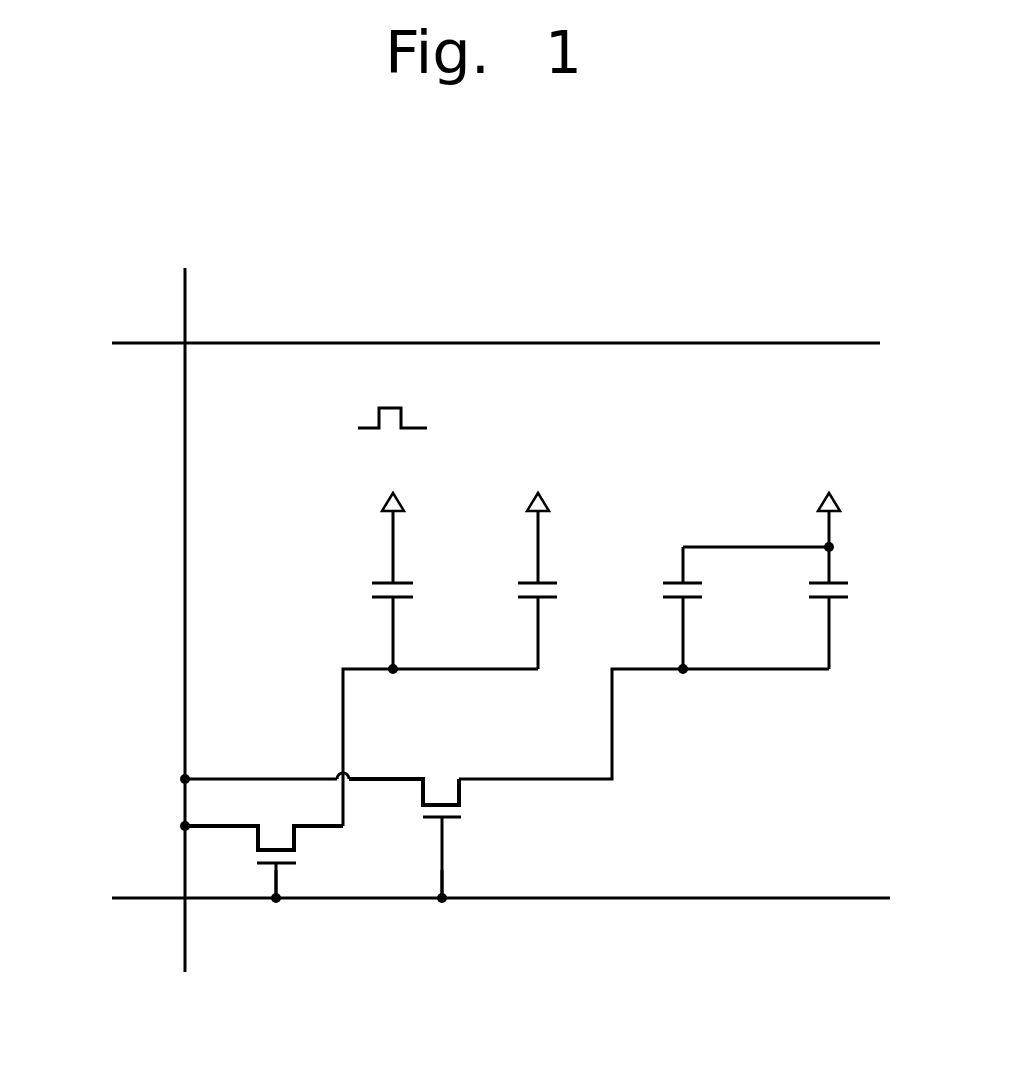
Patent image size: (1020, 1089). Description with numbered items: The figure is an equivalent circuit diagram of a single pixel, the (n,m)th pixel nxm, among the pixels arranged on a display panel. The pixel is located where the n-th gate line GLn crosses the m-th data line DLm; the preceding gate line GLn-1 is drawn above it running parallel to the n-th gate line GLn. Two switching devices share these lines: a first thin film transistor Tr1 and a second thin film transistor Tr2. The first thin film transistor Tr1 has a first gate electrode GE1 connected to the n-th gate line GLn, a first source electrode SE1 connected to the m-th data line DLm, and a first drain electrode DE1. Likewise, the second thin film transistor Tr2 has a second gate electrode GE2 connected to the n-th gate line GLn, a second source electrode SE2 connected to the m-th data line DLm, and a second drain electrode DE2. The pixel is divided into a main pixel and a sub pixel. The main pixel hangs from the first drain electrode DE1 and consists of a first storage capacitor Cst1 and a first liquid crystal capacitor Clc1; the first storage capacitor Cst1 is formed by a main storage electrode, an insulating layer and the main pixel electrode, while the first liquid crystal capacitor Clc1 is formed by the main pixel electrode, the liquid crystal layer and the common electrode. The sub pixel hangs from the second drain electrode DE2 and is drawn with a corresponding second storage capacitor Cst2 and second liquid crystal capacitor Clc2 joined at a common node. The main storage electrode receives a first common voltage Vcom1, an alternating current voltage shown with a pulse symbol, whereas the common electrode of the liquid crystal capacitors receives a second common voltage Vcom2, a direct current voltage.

The (n,m)th pixel nxm is at (568, 278).
The m-th data line DLm is at (188, 641).
The previous gate line GLn-1 is at (456, 344).
The n-th gate line GLn is at (474, 897).
The first source electrode SE1 is at (220, 823).
The first thin film transistor Tr1 is at (243, 849).
The first gate electrode GE1 is at (278, 878).
The first drain electrode DE1 is at (343, 709).
The second source electrode SE2 is at (386, 780).
The second thin film transistor Tr2 is at (480, 810).
The second gate electrode GE2 is at (443, 880).
The second drain electrode DE2 is at (534, 781).
The first storage capacitor Cst1 is at (361, 590).
The first liquid crystal capacitor Clc1 is at (507, 590).
The second storage capacitor Cst2 is at (748, 605).
The second liquid crystal capacitor Clc2 is at (858, 590).
The first common voltage Vcom1 is at (392, 459).
The second common voltage Vcom2 is at (681, 479).